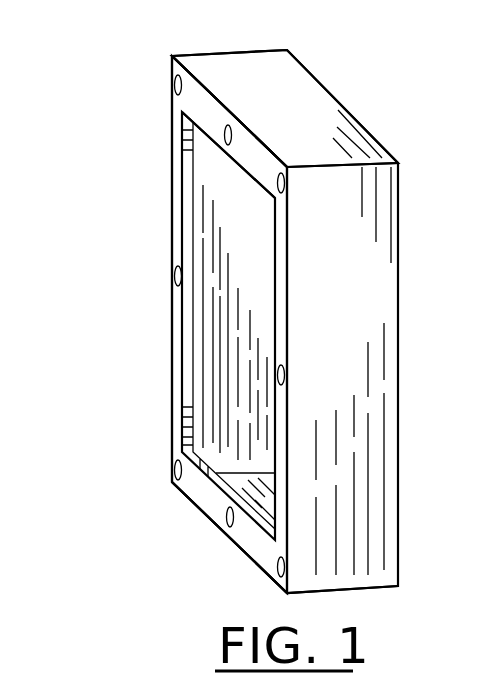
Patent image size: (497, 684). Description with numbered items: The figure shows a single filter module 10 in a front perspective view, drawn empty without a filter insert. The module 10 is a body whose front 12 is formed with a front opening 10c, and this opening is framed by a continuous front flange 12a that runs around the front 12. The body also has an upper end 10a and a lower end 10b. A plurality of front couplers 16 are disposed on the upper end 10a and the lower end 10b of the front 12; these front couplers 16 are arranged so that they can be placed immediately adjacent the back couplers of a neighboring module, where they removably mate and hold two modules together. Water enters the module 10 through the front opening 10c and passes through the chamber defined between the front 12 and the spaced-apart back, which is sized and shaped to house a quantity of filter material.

The single filter module 10 is at (395, 435).
The upper end 10a is at (137, 90).
The lower end 10b is at (163, 473).
The front opening 10c is at (202, 312).
The front 12 is at (107, 372).
The front flange 12a is at (207, 108).
The front couplers 16 is at (175, 82).